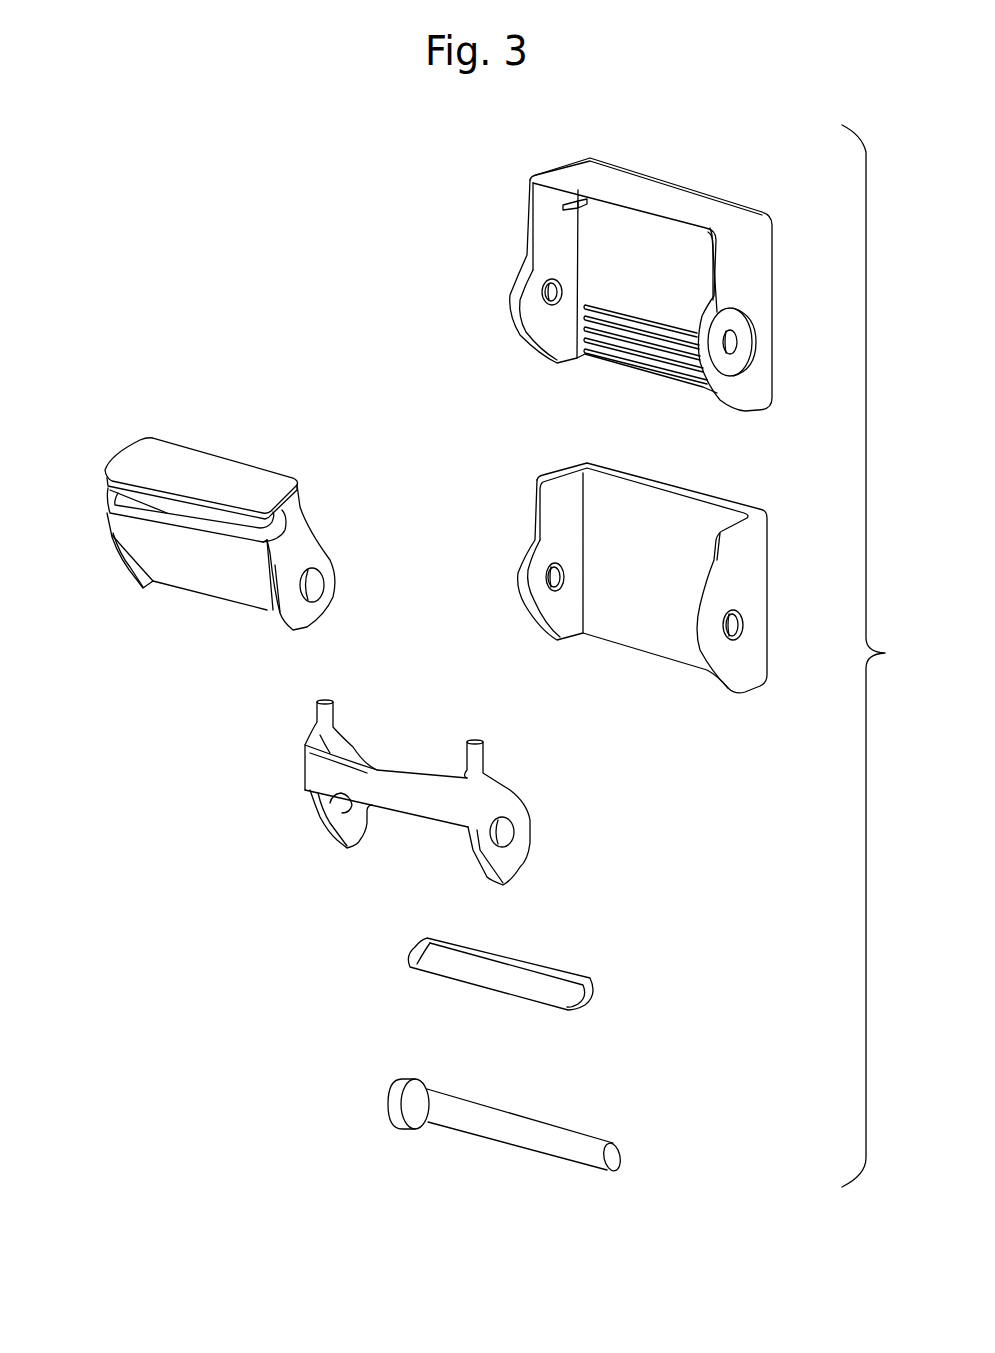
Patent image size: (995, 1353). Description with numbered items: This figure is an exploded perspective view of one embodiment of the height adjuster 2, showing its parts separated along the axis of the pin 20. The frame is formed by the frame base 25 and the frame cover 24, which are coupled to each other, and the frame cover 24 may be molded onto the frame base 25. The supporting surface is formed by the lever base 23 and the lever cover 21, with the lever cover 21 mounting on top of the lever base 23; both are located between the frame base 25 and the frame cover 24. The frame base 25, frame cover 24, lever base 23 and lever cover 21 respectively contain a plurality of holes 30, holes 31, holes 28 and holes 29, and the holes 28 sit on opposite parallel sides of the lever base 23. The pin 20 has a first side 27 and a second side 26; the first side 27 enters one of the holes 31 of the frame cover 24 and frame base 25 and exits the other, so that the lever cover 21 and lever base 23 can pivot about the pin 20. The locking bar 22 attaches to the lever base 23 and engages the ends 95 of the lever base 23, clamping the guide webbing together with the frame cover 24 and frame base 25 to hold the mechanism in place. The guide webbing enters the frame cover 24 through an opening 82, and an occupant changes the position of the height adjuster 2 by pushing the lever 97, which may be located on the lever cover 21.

The height adjuster 2 is at (873, 656).
The pin 20 is at (512, 1112).
The lever cover 21 is at (217, 514).
The locking bar 22 is at (410, 951).
The lever base 23 is at (399, 809).
The frame cover 24 is at (633, 272).
The frame base 25 is at (644, 574).
The second side 26 is at (398, 1108).
The first side 27 is at (615, 1154).
The holes 28 is at (337, 802).
The holes 29 is at (318, 587).
The holes 30 is at (547, 580).
The holes 31 is at (547, 295).
The opening 82 is at (716, 192).
The ends 95 is at (347, 850).
The lever 97 is at (220, 460).